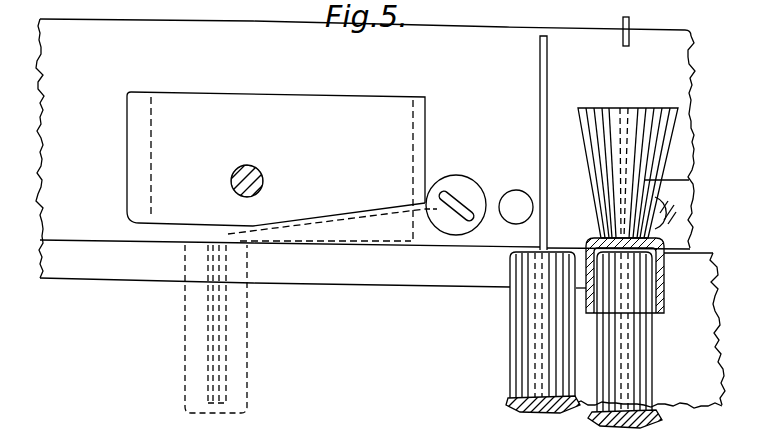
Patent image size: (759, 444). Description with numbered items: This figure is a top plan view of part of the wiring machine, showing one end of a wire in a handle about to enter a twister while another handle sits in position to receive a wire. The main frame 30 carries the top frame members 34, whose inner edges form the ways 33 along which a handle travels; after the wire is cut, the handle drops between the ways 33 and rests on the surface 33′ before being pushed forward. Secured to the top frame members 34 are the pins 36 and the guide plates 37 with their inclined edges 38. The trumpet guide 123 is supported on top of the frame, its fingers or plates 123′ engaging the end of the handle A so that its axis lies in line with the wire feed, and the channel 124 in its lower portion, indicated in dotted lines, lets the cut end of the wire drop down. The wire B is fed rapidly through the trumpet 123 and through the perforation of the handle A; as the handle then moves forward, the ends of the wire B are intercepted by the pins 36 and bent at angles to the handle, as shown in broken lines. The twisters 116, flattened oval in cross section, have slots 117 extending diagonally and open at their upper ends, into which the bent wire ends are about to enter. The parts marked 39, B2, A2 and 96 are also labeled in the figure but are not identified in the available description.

The main frame 30 is at (696, 68).
The top frame members 34 is at (118, 28).
The ways 33 is at (382, 315).
The surface 33' is at (436, 294).
The guide plates 37 is at (427, 157).
The inclined edges 38 is at (352, 213).
The pivot point 39 is at (413, 197).
The pins 36 is at (516, 192).
The slots 117 is at (458, 200).
The twisters 116 is at (470, 220).
The wire B is at (548, 78).
The slide member B2 is at (391, 228).
The channel 124 is at (623, 118).
The trumpet guide 123 is at (622, 199).
The fingers or plates 123' is at (646, 276).
The handle A is at (510, 357).
The plunger A2 is at (253, 362).
The cylinder 96 is at (644, 345).